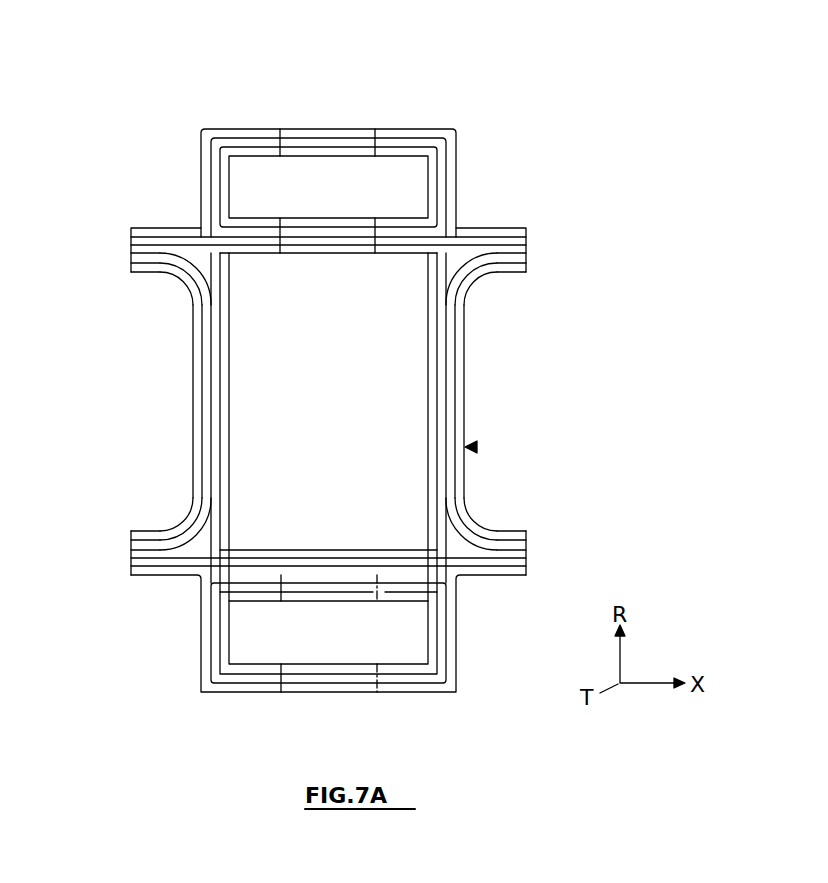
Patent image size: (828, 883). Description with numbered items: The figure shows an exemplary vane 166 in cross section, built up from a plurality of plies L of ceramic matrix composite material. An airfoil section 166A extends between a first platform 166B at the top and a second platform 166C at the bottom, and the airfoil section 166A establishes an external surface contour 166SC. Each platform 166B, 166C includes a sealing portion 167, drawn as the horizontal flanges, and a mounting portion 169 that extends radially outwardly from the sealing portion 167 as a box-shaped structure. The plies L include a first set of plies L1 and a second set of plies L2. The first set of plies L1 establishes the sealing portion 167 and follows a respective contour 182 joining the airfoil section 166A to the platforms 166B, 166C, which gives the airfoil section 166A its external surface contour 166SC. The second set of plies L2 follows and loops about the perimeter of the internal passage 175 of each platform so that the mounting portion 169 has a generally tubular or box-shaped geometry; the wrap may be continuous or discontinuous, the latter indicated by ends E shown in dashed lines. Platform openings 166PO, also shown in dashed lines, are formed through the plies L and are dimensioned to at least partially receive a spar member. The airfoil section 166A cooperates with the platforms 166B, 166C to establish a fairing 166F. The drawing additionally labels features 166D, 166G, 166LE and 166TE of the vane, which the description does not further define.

The vane 166 is at (168, 60).
The airfoil section 166A is at (193, 455).
The first platform 166B is at (201, 164).
The second platform 166C is at (201, 648).
The interior cavity 166D is at (360, 463).
The fairing 166F is at (471, 447).
The flange outer edge 166G is at (140, 273).
The leading edge 166LE is at (193, 425).
The trailing edge 166TE is at (468, 408).
The external surface contour 166SC is at (188, 403).
The platform opening 166PO is at (283, 129).
The sealing portion 167 is at (490, 228).
The mounting portion 169 is at (408, 129).
The internal passage 175 is at (352, 201).
The contour 182 is at (181, 281).
The plies L is at (131, 253).
The first set of plies L1 is at (197, 342).
The second set of plies L2 is at (242, 147).
The ends E is at (341, 593).